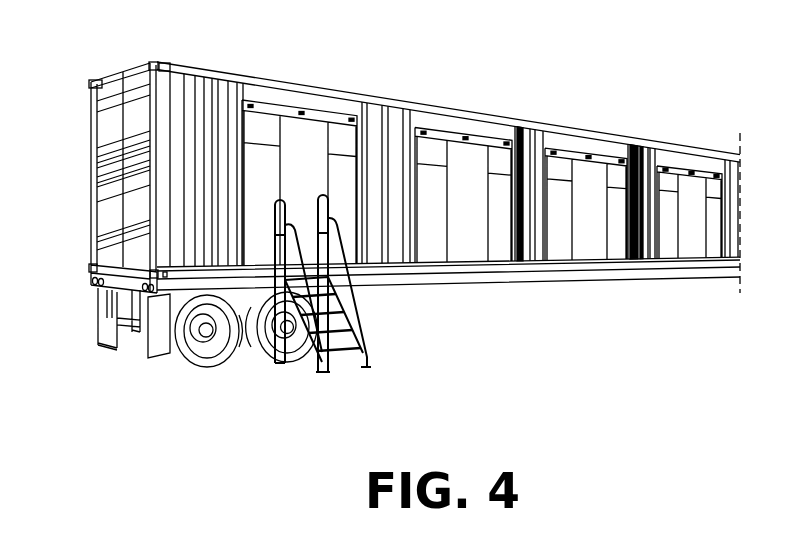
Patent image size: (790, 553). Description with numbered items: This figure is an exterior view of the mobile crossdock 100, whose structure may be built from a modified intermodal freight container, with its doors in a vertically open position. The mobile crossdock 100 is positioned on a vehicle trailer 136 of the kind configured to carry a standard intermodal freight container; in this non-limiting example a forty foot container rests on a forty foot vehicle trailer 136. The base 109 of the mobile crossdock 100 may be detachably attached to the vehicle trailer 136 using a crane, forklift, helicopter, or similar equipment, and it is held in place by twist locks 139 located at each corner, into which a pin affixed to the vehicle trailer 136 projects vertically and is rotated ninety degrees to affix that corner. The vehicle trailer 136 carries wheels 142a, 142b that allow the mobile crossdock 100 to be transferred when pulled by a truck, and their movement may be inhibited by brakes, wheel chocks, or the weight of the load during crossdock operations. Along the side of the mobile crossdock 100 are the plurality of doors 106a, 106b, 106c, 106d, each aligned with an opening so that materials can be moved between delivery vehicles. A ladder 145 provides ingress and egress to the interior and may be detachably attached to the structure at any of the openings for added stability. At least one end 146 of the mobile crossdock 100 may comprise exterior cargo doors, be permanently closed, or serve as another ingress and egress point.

The mobile crossdock 100 is at (378, 235).
The door 106a is at (322, 115).
The door 106b is at (461, 136).
The door 106c is at (590, 163).
The door 106d is at (692, 177).
The end 146 is at (100, 138).
The twist lock 139 is at (88, 268).
The wheel 142a is at (207, 368).
The wheel 142b is at (291, 363).
The ladder 145 is at (350, 360).
The base 109 is at (423, 273).
The vehicle trailer 136 is at (493, 282).